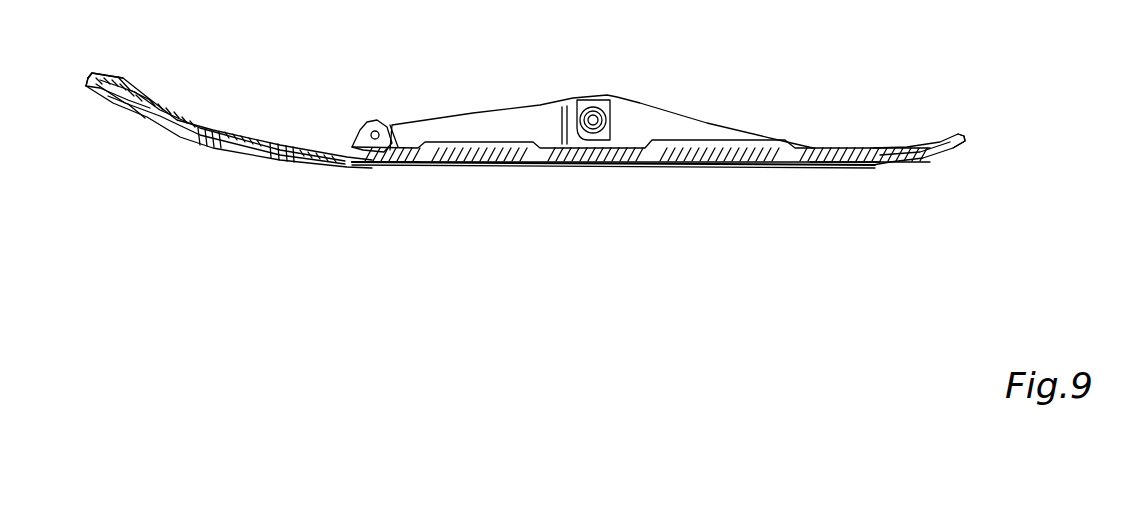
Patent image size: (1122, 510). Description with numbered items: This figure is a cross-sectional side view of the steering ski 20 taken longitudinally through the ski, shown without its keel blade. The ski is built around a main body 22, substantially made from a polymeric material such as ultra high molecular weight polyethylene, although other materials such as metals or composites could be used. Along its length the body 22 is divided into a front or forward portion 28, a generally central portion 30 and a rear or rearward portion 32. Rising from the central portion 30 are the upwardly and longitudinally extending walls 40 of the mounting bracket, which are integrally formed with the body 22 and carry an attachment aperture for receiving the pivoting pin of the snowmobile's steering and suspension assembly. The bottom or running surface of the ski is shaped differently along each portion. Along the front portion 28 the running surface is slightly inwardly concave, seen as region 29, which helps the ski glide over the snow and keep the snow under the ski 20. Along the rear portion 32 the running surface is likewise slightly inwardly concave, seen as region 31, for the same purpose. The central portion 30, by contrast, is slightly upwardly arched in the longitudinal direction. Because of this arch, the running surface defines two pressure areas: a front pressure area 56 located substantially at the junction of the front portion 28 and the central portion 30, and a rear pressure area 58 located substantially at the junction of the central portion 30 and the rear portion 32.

The steering ski 20 is at (892, 66).
The main body 22 is at (813, 141).
The front portion 28 is at (380, 207).
The inwardly concave region 29 is at (245, 150).
The central portion 30 is at (843, 217).
The inwardly concave region 31 is at (918, 160).
The rear portion 32 is at (953, 217).
The upwardly and longitudinally extending walls 40 is at (650, 118).
The front pressure area 56 is at (373, 170).
The rear pressure area 58 is at (813, 167).